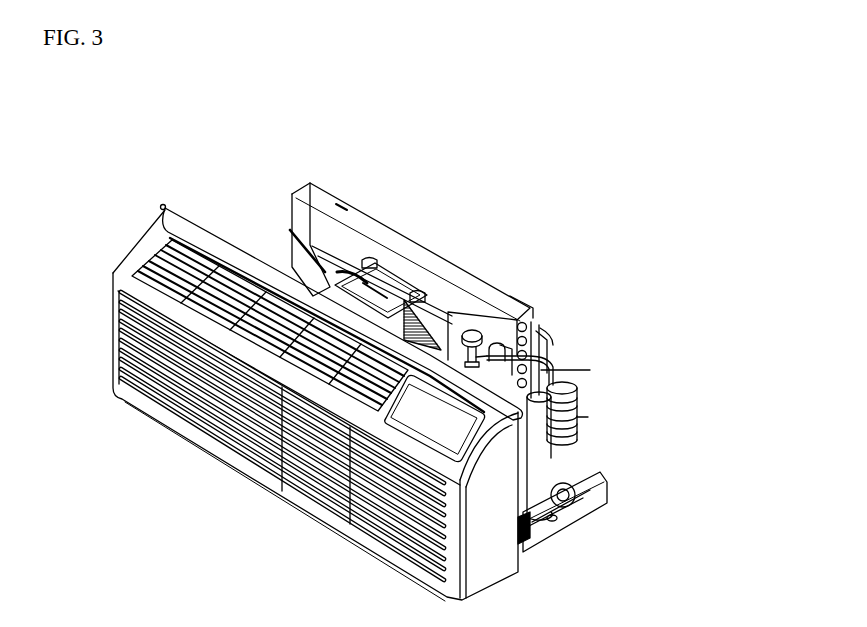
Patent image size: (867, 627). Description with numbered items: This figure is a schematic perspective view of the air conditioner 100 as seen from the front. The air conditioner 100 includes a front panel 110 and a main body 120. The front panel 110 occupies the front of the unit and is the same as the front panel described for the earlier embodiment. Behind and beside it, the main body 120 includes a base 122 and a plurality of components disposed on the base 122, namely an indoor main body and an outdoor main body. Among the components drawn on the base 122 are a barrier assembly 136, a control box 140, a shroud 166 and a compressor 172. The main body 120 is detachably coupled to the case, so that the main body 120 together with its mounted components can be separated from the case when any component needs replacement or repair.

The air conditioner 100 is at (388, 108).
The front panel 110 is at (118, 272).
The main body 120 is at (452, 233).
The base 122 is at (604, 493).
The barrier assembly 136 is at (196, 217).
The control box 140 is at (535, 529).
The shroud 166 is at (305, 192).
The compressor 172 is at (548, 453).